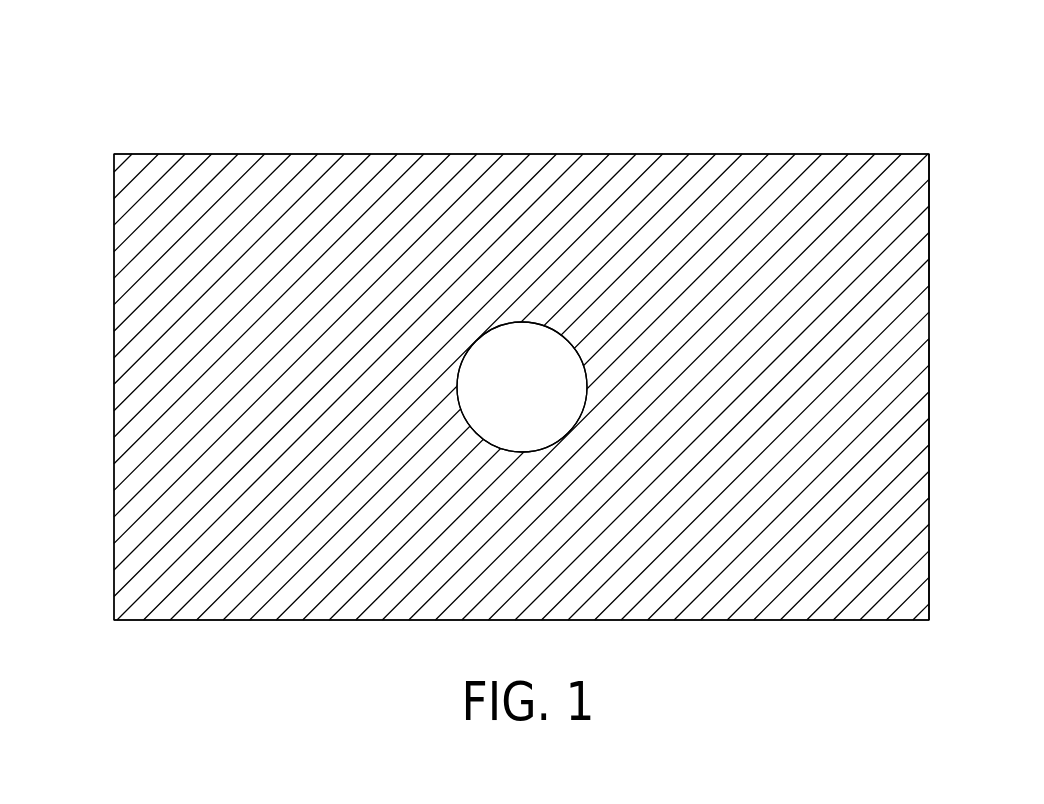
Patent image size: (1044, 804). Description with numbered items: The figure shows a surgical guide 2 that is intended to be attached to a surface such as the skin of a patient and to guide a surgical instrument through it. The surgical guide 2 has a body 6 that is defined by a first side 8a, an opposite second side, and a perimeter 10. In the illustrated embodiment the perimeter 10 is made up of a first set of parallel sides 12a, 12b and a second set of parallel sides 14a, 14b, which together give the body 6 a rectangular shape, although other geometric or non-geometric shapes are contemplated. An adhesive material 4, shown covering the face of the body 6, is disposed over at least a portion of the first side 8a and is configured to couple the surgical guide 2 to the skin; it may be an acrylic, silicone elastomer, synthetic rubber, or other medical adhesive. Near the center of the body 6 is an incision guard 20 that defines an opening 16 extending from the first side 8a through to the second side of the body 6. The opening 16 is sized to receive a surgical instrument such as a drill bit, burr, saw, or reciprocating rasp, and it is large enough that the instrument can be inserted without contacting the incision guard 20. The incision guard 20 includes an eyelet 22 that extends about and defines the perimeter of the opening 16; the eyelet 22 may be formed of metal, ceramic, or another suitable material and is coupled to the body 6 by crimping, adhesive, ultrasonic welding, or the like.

The surgical guide 2 is at (720, 76).
The adhesive material 4 is at (785, 207).
The body 6 is at (929, 210).
The first side 8a is at (868, 417).
The perimeter 10 is at (929, 565).
The first parallel side 12a is at (114, 390).
The first parallel side 12b is at (929, 265).
The second parallel side 14a is at (202, 152).
The second parallel side 14b is at (235, 620).
The opening 16 is at (543, 369).
The incision guard 20 is at (517, 320).
The eyelet 22 is at (482, 337).